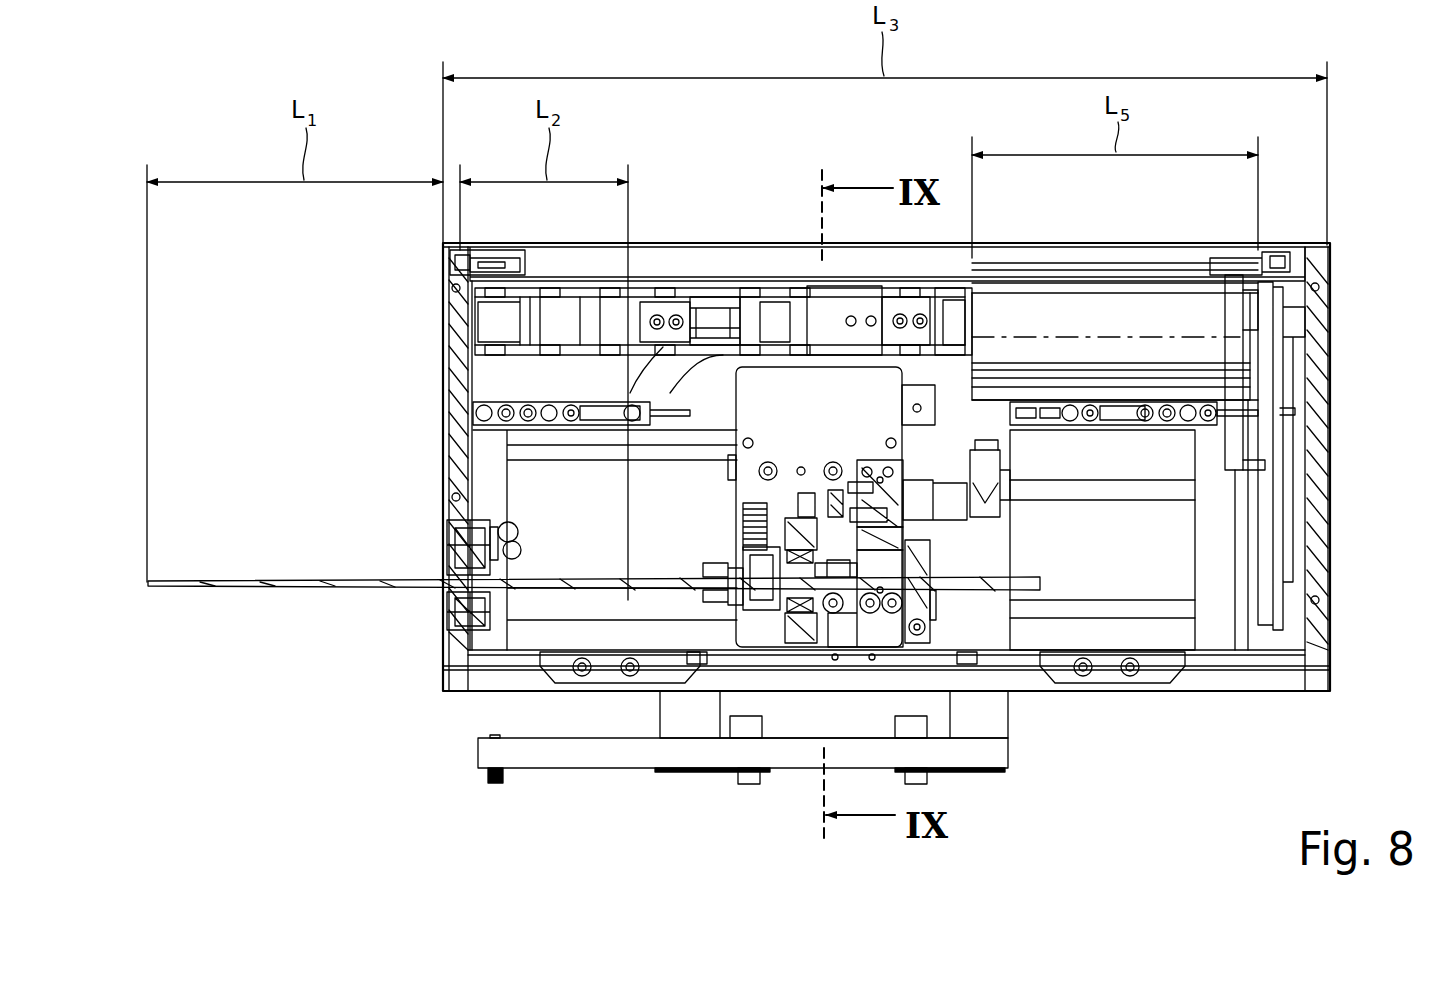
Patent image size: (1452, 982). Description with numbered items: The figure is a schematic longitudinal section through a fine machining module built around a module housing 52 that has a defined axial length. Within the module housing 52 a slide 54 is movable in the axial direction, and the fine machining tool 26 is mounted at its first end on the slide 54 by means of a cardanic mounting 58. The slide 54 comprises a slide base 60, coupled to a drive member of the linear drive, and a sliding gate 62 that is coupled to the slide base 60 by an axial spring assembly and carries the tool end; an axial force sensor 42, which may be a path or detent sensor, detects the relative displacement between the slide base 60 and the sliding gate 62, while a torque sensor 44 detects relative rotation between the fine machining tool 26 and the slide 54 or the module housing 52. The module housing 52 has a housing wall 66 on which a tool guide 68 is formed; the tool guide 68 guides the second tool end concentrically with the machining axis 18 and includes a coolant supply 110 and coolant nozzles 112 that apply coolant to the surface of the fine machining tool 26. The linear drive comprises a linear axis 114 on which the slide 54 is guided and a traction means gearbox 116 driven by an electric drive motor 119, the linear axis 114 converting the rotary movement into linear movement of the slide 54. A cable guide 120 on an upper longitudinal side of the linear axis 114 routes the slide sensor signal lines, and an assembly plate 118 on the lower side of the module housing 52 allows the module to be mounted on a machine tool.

The machining axis 18 is at (1025, 585).
The fine machining tool 26 is at (329, 579).
The axial force sensor 42 is at (840, 460).
The torque sensor 44 is at (845, 660).
The module housing 52 is at (1058, 242).
The slide 54 is at (945, 558).
The cardanic mounting 58 is at (735, 617).
The slide base 60 is at (877, 634).
The sliding gate 62 is at (800, 644).
The housing wall 66 is at (455, 428).
The tool guide 68 is at (429, 563).
The coolant supply 110 is at (520, 535).
The coolant nozzles 112 is at (442, 601).
The linear axis 114 is at (1168, 540).
The traction means gearbox 116 is at (1283, 447).
The assembly plate 118 is at (635, 786).
The drive motor 119 is at (1138, 330).
The cable guide 120 is at (708, 300).